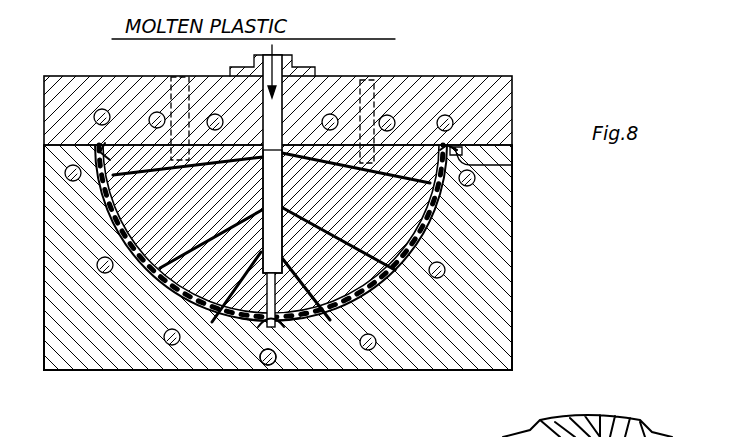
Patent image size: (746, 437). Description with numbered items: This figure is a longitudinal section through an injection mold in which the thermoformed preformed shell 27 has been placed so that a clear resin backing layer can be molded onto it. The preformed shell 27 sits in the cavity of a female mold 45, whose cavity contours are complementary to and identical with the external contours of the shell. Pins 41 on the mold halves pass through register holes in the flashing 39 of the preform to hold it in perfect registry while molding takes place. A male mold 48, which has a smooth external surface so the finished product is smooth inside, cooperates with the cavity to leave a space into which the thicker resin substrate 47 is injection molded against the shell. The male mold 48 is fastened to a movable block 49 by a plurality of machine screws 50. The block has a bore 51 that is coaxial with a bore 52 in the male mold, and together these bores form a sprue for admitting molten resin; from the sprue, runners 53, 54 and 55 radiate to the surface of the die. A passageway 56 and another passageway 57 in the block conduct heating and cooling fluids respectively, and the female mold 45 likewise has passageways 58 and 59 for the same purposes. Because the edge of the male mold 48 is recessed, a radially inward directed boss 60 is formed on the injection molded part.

The preformed shell 27 is at (433, 242).
The flashing 39 is at (513, 125).
The pins 41 is at (513, 165).
The female mold 45 is at (492, 227).
The resin substrate 47 is at (347, 322).
The male mold 48 is at (435, 128).
The movable block 49 is at (513, 85).
The machine screws 50 is at (180, 76).
The bore 51 is at (278, 108).
The bore 52 is at (270, 205).
The runner 53 is at (271, 183).
The runner 54 is at (277, 265).
The runner 55 is at (285, 323).
The passageway 56 is at (453, 123).
The passageway 57 is at (387, 113).
The passageway 58 is at (146, 371).
The passageway 59 is at (260, 371).
The radially inward directed boss 60 is at (107, 143).